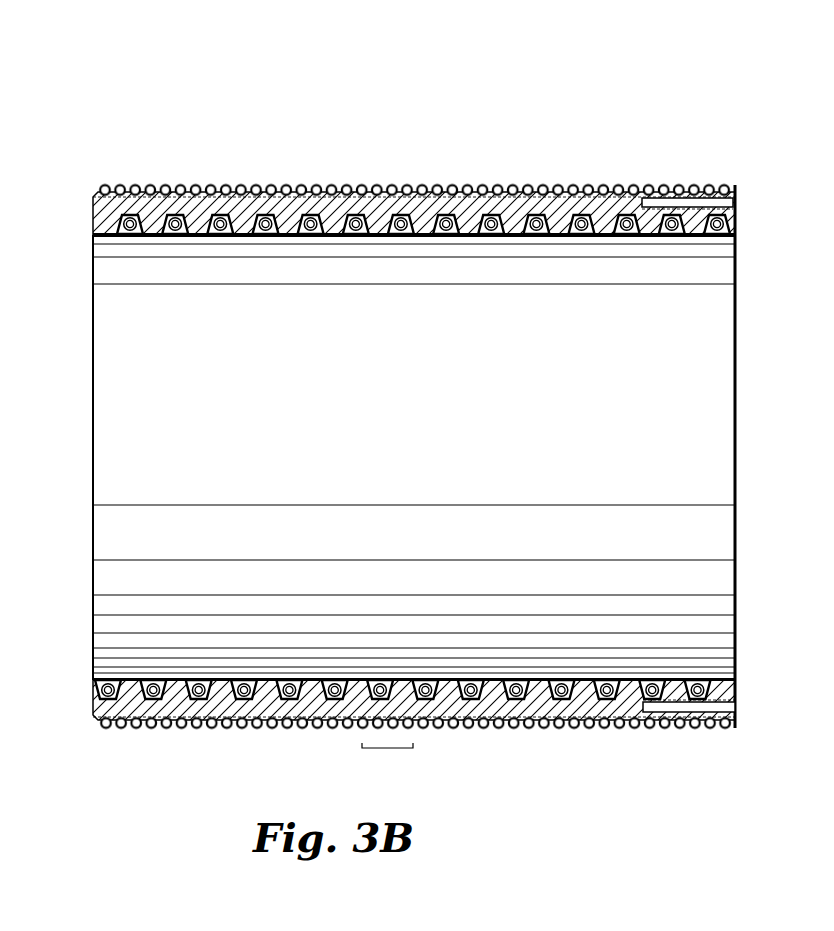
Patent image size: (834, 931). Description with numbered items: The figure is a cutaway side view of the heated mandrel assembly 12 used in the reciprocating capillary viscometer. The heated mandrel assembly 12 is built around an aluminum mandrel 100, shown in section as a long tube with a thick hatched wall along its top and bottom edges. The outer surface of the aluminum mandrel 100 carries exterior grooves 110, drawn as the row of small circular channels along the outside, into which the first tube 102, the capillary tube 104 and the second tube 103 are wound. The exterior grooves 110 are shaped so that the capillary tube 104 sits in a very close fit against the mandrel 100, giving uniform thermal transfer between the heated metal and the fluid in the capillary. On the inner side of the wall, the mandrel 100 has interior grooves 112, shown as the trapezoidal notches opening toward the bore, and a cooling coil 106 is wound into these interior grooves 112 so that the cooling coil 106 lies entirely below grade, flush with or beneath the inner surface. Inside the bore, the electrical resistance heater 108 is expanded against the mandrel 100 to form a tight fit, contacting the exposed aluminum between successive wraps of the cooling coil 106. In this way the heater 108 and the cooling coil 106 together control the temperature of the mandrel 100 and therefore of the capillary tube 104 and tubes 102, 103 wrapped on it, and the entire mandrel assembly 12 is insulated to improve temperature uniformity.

The heated mandrel assembly 12 is at (460, 445).
The aluminum mandrel 100 is at (460, 456).
The first tube 102 is at (210, 730).
The second tube 103 is at (457, 711).
The capillary tube 104 is at (388, 748).
The cooling coil 106 is at (697, 681).
The electrical resistance heater 108 is at (660, 352).
The exterior grooves 110 is at (414, 218).
The interior grooves 112 is at (131, 237).